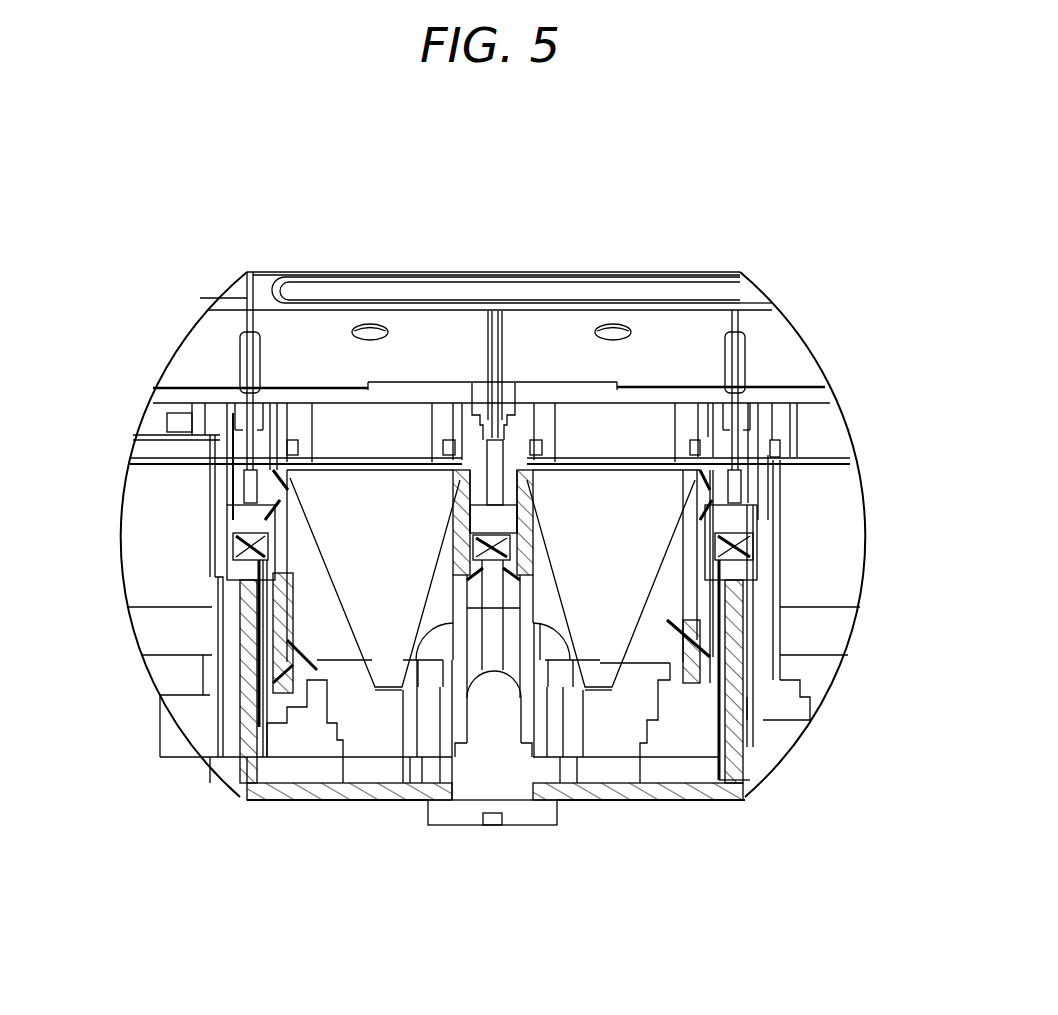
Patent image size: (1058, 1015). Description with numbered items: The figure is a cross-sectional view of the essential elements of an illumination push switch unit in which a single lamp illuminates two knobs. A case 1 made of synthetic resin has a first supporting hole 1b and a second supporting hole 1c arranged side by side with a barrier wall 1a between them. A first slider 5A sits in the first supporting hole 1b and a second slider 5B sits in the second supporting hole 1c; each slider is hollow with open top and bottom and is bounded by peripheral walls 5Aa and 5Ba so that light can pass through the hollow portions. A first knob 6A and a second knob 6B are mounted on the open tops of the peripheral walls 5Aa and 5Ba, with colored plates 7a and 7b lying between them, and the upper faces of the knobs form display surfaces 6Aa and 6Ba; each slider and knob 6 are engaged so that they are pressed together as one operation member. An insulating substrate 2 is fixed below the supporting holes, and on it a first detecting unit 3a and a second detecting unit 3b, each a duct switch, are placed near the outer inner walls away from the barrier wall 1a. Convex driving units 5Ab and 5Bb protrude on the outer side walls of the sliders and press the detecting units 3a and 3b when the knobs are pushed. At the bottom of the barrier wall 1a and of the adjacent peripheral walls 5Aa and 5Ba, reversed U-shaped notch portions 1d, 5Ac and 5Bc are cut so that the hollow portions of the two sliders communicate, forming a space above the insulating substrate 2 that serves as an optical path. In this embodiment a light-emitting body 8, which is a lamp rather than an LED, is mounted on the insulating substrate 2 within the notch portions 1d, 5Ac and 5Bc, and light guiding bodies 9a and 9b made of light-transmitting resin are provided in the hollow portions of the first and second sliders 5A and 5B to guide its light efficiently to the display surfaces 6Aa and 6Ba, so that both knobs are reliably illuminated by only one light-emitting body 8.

The case 1 is at (244, 548).
The barrier wall 1a is at (499, 580).
The first supporting hole 1b is at (277, 600).
The second supporting hole 1c is at (717, 613).
The notch portion 1d is at (492, 653).
The insulating substrate 2 is at (708, 808).
The first detecting unit 3a is at (297, 770).
The second detecting unit 3b is at (680, 770).
The first slider 5A is at (330, 505).
The peripheral wall 5Aa is at (462, 510).
The driving unit 5Ab is at (307, 708).
The notch portion 5Ac is at (477, 647).
The second slider 5B is at (660, 493).
The peripheral wall 5Ba is at (527, 510).
The driving unit 5Bb is at (703, 657).
The notch portion 5Bc is at (510, 643).
The knob 6 is at (490, 254).
The first knob 6A is at (443, 343).
The display surface 6Aa is at (300, 342).
The second knob 6B is at (702, 334).
The display surface 6Ba is at (562, 337).
The colored plate 7a is at (375, 458).
The colored plate 7b is at (624, 460).
The light-emitting body 8 is at (487, 700).
The light guiding body 9a is at (388, 667).
The light guiding body 9b is at (590, 667).